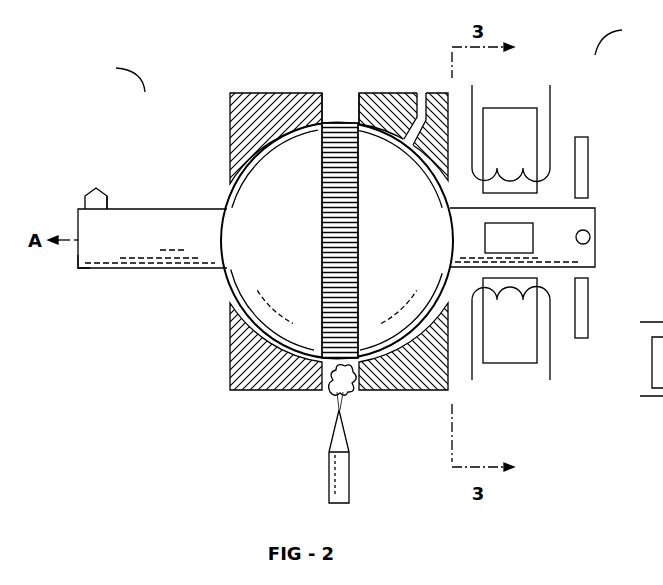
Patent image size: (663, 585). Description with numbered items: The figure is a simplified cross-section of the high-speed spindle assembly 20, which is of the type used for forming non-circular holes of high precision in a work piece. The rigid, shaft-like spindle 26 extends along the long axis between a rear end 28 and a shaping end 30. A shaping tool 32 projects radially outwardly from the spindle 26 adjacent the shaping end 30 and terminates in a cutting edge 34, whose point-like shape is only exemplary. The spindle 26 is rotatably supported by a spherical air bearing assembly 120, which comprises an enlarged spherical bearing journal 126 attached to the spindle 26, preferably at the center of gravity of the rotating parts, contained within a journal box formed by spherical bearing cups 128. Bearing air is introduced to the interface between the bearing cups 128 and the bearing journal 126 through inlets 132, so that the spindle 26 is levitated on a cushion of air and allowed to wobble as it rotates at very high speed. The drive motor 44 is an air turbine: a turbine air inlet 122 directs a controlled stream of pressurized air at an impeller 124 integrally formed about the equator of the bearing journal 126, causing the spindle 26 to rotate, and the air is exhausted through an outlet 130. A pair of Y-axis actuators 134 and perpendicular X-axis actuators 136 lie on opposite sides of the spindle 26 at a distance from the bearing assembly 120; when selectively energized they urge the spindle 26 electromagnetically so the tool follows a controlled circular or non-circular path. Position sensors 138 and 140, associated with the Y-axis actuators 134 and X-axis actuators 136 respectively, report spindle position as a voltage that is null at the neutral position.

The spindle assembly 20 is at (592, 59).
The spindle 26 is at (147, 274).
The rear end 28 is at (596, 248).
The shaping end 30 is at (78, 266).
The shaping tool 32 is at (110, 198).
The cutting edge 34 is at (96, 186).
The drive motor 44 is at (333, 396).
The spherical air bearing assembly 120 is at (145, 98).
The turbine air inlet 122 is at (350, 478).
The impeller 124 is at (322, 212).
The spherical bearing journal 126 is at (295, 150).
The journal box 128 is at (253, 160).
The outlet 130 is at (338, 102).
The inlets 132 is at (418, 102).
The Y-axis actuators 134 is at (508, 108).
The X-axis actuators 136 is at (485, 245).
The position sensors 138 is at (589, 160).
The position sensor 140 is at (589, 232).